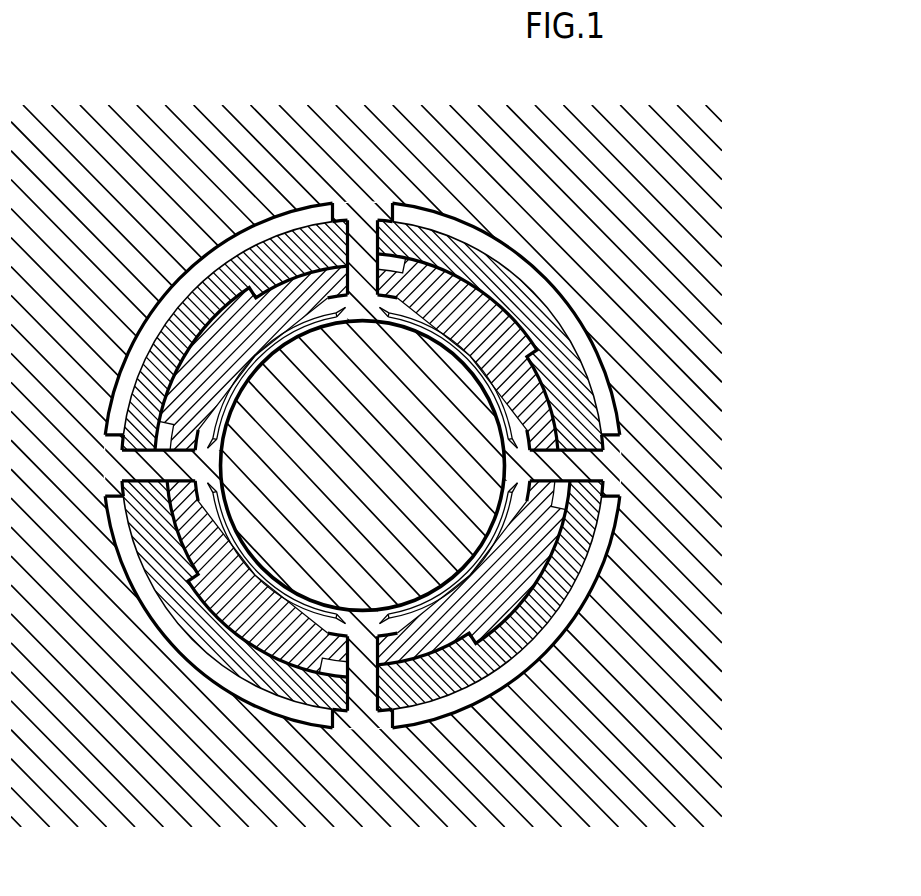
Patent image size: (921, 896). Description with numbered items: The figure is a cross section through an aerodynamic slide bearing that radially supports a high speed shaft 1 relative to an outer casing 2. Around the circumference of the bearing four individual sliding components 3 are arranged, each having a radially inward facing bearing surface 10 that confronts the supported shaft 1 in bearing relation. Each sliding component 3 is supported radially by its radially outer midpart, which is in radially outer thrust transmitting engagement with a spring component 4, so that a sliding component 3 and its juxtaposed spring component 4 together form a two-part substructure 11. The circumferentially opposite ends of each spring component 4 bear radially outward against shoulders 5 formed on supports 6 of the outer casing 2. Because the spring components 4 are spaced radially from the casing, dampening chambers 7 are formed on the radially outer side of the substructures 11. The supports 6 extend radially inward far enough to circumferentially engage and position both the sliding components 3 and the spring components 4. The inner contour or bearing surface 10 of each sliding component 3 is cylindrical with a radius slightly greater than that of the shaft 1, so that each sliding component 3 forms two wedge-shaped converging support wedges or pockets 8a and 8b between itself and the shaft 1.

The high speed shaft 1 is at (374, 461).
The outer casing 2 is at (305, 793).
The sliding component 3 is at (338, 248).
The spring component 4 is at (277, 240).
The shoulder 5 is at (379, 212).
The support 6 is at (362, 290).
The dampening chamber 7 is at (155, 628).
The support wedge 8a is at (392, 300).
The support wedge 8b is at (336, 300).
The bearing surface 10 is at (142, 382).
The substructure 11 is at (226, 305).